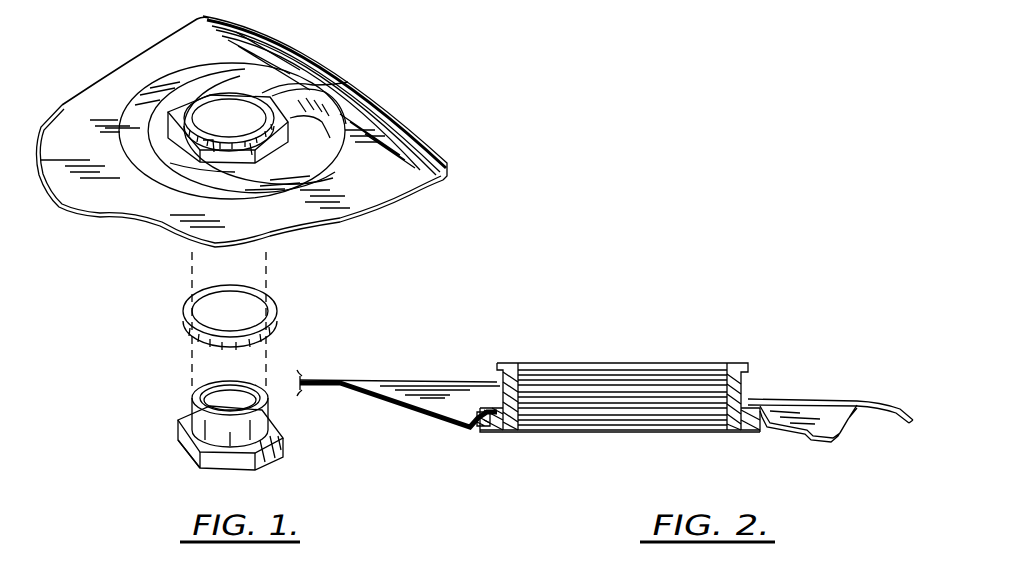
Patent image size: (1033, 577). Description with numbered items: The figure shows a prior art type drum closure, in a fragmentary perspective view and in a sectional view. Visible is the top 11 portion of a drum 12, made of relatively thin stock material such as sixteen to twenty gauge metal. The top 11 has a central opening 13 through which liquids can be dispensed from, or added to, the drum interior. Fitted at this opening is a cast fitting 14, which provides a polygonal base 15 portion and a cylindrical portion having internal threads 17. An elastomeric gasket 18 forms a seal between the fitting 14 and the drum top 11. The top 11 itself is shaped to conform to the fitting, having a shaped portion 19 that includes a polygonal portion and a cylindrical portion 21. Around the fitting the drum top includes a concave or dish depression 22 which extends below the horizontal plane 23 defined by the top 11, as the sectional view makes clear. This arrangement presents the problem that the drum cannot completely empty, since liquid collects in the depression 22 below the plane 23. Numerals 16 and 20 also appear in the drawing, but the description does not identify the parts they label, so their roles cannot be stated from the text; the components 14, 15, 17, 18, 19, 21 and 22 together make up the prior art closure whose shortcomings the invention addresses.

In FIG. 1, the top 11 is at (80, 113).
In FIG. 2, the top 11 is at (456, 380).
In FIG. 1, the drum 12 is at (338, 68).
In FIG. 1, the central opening 13 is at (240, 112).
In FIG. 1, the cast fitting 14 is at (232, 414).
In FIG. 2, the cast fitting 14 is at (585, 396).
In FIG. 1, the polygonal base 15 is at (193, 455).
In FIG. 1, the collar 16 is at (192, 410).
In FIG. 1, the internal threads 17 is at (237, 393).
In FIG. 2, the internal threads 17 is at (521, 390).
In FIG. 1, the elastomeric gasket 18 is at (281, 311).
In FIG. 2, the elastomeric gasket 18 is at (482, 427).
In FIG. 1, the shaped portion 19 is at (330, 138).
In FIG. 1, the nut lower edge 20 is at (200, 156).
In FIG. 1, the cylindrical portion 21 is at (348, 80).
In FIG. 1, the concave or dish depression 22 is at (177, 94).
In FIG. 2, the horizontal plane 23 is at (802, 391).